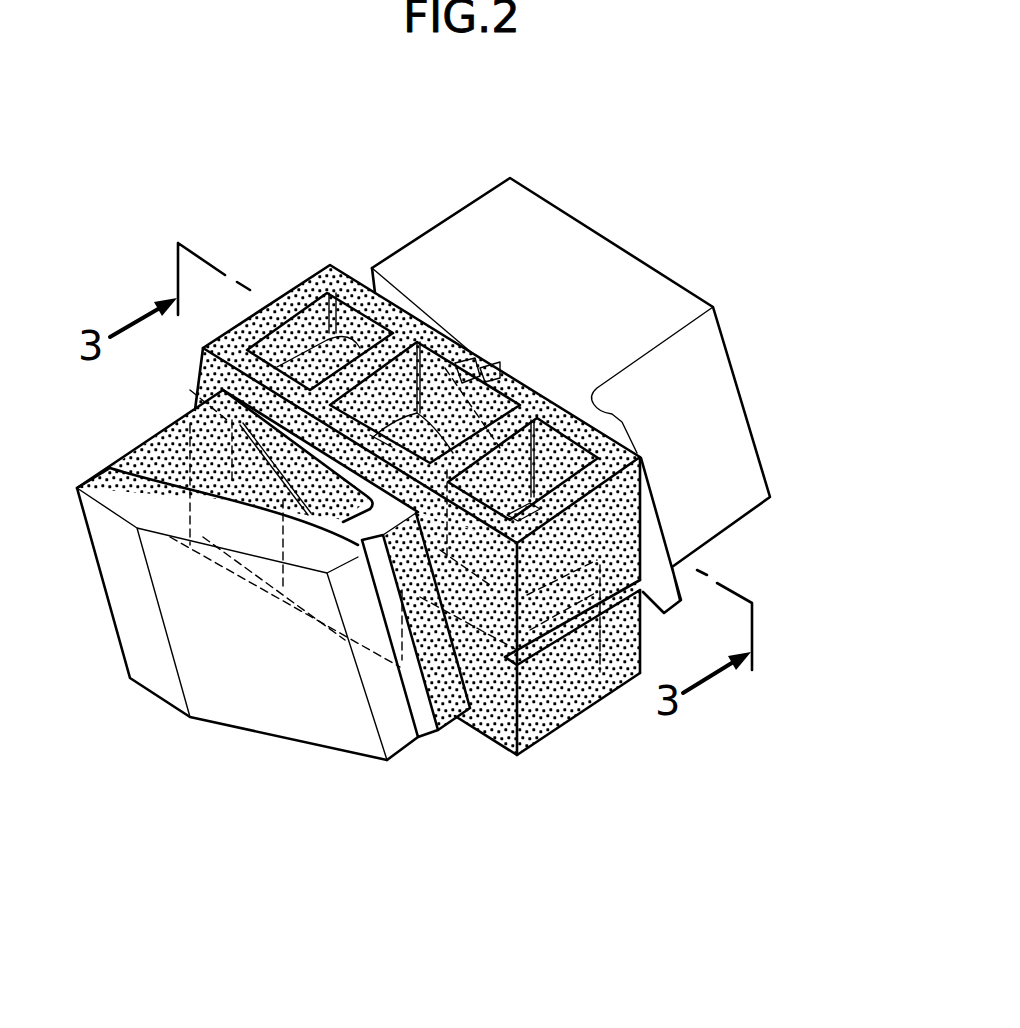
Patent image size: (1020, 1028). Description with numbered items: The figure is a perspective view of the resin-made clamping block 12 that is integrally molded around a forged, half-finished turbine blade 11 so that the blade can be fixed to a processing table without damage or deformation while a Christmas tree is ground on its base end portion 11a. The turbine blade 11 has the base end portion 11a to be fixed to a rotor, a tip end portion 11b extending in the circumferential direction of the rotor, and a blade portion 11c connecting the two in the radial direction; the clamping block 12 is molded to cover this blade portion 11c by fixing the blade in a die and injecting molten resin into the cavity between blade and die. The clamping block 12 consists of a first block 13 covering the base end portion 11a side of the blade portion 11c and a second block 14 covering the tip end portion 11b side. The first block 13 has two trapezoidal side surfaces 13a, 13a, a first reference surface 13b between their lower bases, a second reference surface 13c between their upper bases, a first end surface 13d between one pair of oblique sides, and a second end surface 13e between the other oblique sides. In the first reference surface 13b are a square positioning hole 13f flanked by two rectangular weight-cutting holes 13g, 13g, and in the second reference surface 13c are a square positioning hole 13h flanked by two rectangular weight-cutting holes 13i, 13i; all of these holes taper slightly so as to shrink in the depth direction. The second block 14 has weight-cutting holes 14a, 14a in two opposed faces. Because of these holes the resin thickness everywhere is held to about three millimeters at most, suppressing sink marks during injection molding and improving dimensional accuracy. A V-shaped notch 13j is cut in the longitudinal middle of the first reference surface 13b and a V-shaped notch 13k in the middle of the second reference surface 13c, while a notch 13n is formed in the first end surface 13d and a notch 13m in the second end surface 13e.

The turbine blade 11 is at (413, 185).
The base end portion 11a is at (590, 248).
The tip end portion 11b is at (217, 700).
The blade portion 11c is at (213, 395).
The clamping block 12 is at (500, 850).
The first block 13 is at (502, 757).
The side surface 13a is at (397, 307).
The first reference surface 13b is at (607, 700).
The second reference surface 13c is at (560, 413).
The first end surface 13d is at (570, 680).
The second end surface 13e is at (283, 293).
The positioning hole 13f is at (318, 597).
The weight-cutting hole 13g is at (247, 567).
The positioning hole 13h is at (493, 403).
The weight-cutting hole 13i is at (347, 320).
The V-shaped notch 13j is at (353, 637).
The V-shaped notch 13k is at (476, 362).
The notch 13m is at (195, 470).
The notch 13n is at (587, 610).
The second block 14 is at (435, 740).
The weight-cutting hole 14a is at (237, 487).